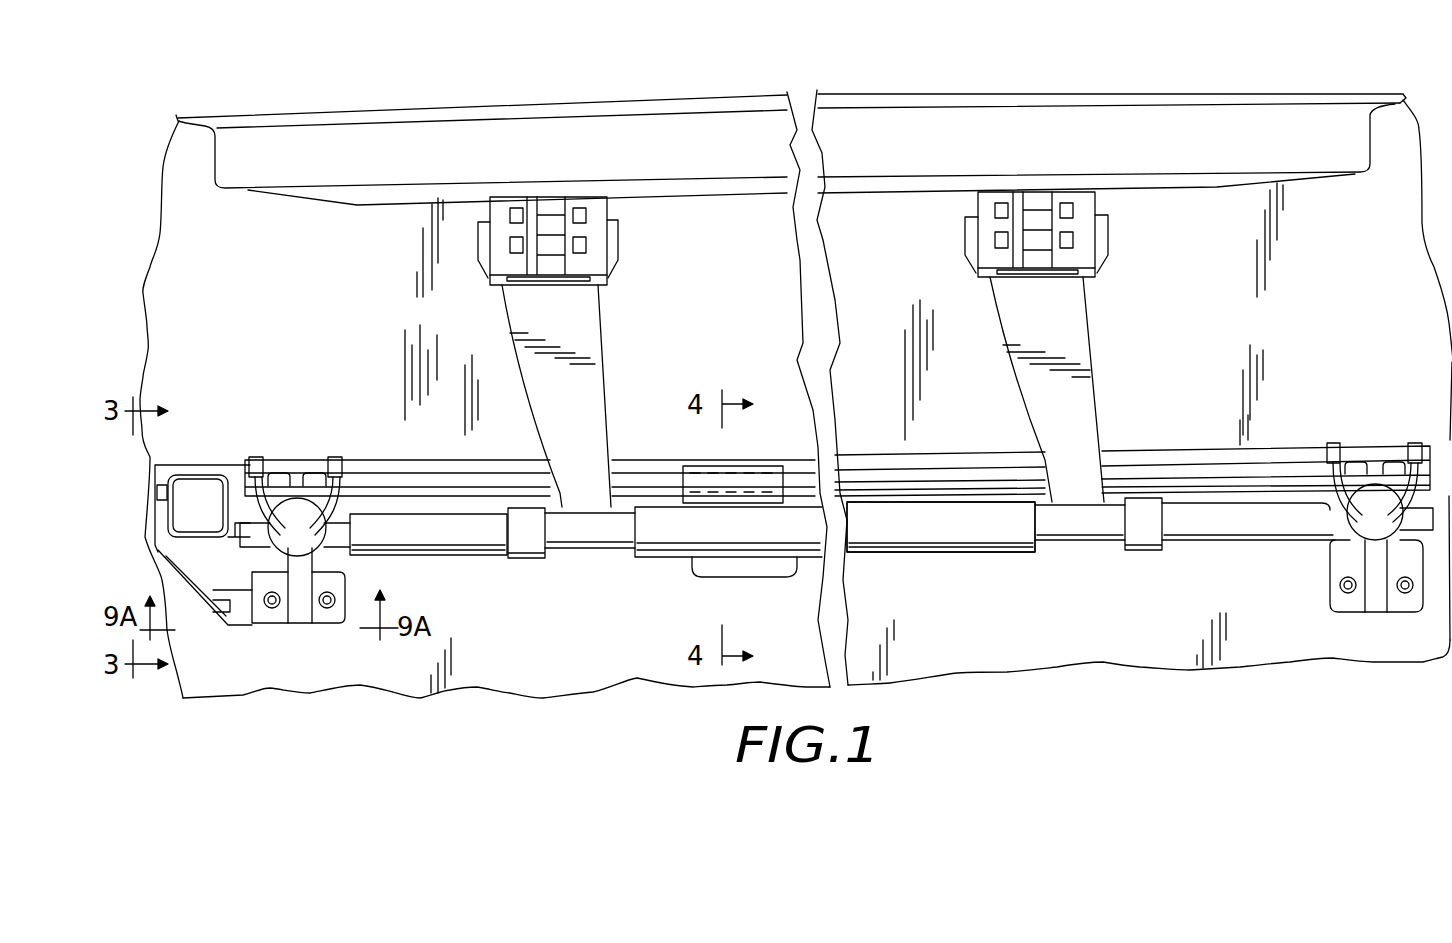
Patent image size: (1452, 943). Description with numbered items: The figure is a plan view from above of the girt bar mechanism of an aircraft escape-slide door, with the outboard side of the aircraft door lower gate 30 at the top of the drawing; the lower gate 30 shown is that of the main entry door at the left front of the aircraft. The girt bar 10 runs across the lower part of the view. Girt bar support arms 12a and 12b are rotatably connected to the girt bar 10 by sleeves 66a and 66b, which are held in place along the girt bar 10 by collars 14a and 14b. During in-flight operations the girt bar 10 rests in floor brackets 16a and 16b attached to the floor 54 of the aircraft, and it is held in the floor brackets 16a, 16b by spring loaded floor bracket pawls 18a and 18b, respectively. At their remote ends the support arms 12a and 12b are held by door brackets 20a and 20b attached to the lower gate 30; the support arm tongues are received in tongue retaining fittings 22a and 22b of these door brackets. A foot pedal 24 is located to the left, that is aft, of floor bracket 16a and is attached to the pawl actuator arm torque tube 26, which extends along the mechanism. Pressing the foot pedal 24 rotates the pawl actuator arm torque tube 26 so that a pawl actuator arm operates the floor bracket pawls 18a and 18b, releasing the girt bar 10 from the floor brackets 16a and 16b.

The aircraft door lower gate 30 is at (735, 90).
The door bracket 20a is at (597, 200).
The tongue retaining fitting 22a is at (618, 243).
The girt bar support arm 12a is at (607, 393).
The door bracket 20b is at (1073, 193).
The tongue retaining fitting 22b is at (1110, 240).
The girt bar support arm 12b is at (1095, 385).
The foot pedal 24 is at (200, 487).
The pawl actuator arm torque tube 26 is at (432, 487).
The floor bracket pawl 18a is at (303, 545).
The collar 14a is at (537, 558).
The floor bracket 16a is at (325, 623).
The sleeve 66a is at (590, 555).
The floor 54 is at (530, 655).
The girt bar 10 is at (980, 552).
The sleeve 66b is at (1107, 552).
The collar 14b is at (1137, 552).
The floor bracket pawl 18b is at (1375, 527).
The floor bracket 16b is at (1378, 612).